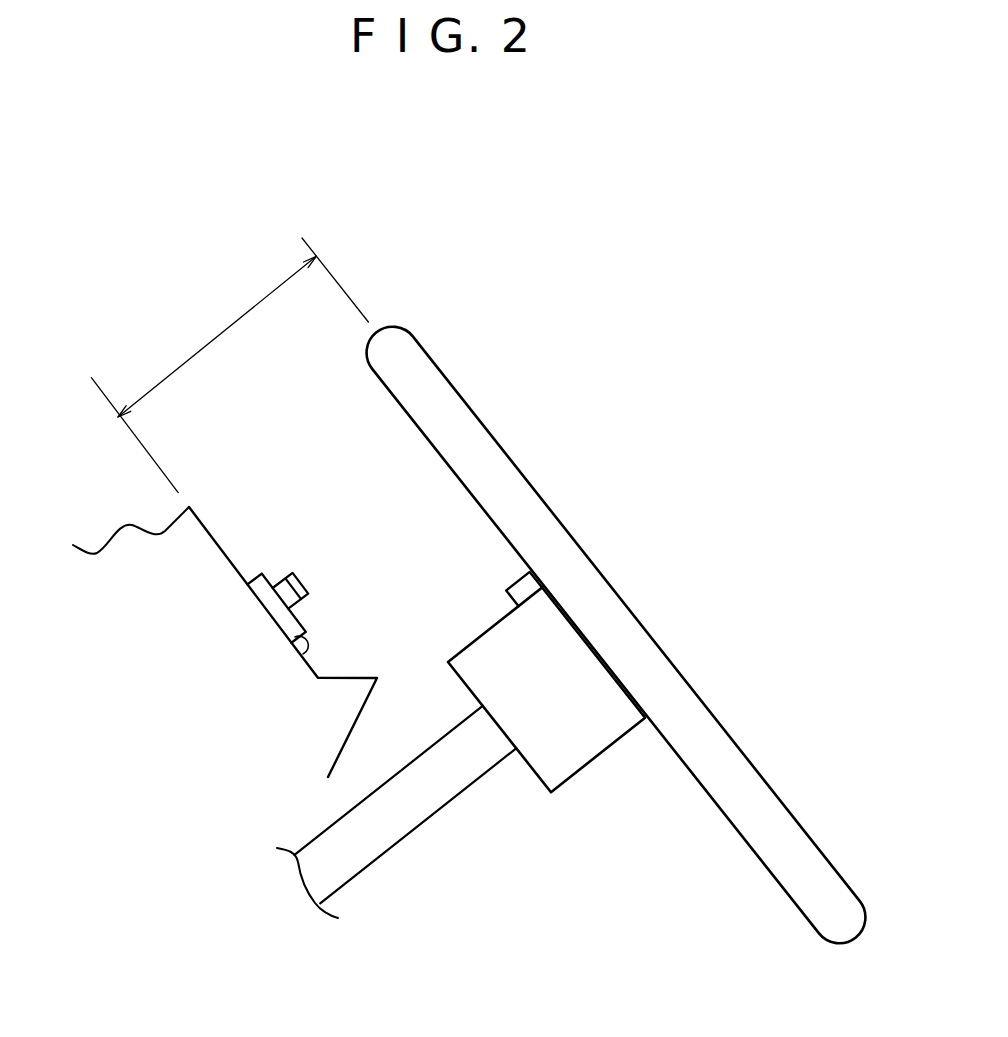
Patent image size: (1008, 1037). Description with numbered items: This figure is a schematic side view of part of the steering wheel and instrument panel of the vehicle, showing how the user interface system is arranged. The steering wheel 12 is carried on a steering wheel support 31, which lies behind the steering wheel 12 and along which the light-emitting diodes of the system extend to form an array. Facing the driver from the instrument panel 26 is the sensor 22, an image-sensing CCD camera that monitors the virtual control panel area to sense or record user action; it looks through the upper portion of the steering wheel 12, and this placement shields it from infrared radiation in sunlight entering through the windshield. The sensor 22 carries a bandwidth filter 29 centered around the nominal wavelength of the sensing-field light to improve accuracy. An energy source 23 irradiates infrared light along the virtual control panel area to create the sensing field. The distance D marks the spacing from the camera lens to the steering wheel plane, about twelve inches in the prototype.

The steering wheel 12 is at (841, 946).
The sensor 22 is at (300, 652).
The energy source 23 is at (504, 584).
The instrument panel 26 is at (213, 543).
The bandwidth filter 29 is at (291, 576).
The steering wheel support 31 is at (536, 777).
The distance D is at (243, 316).